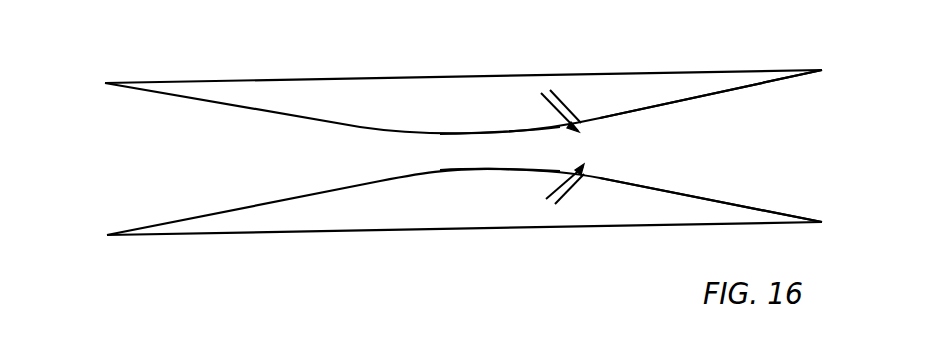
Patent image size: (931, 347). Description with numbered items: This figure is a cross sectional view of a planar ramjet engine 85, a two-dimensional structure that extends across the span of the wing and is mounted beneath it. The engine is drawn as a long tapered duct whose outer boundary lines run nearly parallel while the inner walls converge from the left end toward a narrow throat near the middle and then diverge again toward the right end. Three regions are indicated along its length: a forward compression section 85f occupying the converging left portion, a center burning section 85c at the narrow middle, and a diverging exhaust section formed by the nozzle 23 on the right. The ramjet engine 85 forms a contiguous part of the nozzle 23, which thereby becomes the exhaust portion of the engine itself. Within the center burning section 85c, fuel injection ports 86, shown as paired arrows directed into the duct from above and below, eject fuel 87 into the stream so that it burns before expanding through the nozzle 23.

The ramjet engine 85 is at (355, 230).
The forward compression section 85f is at (243, 105).
The center burning section 85c is at (508, 132).
The fuel injection ports 86 is at (568, 101).
The fuel 87 is at (588, 135).
The nozzle 23 is at (757, 83).